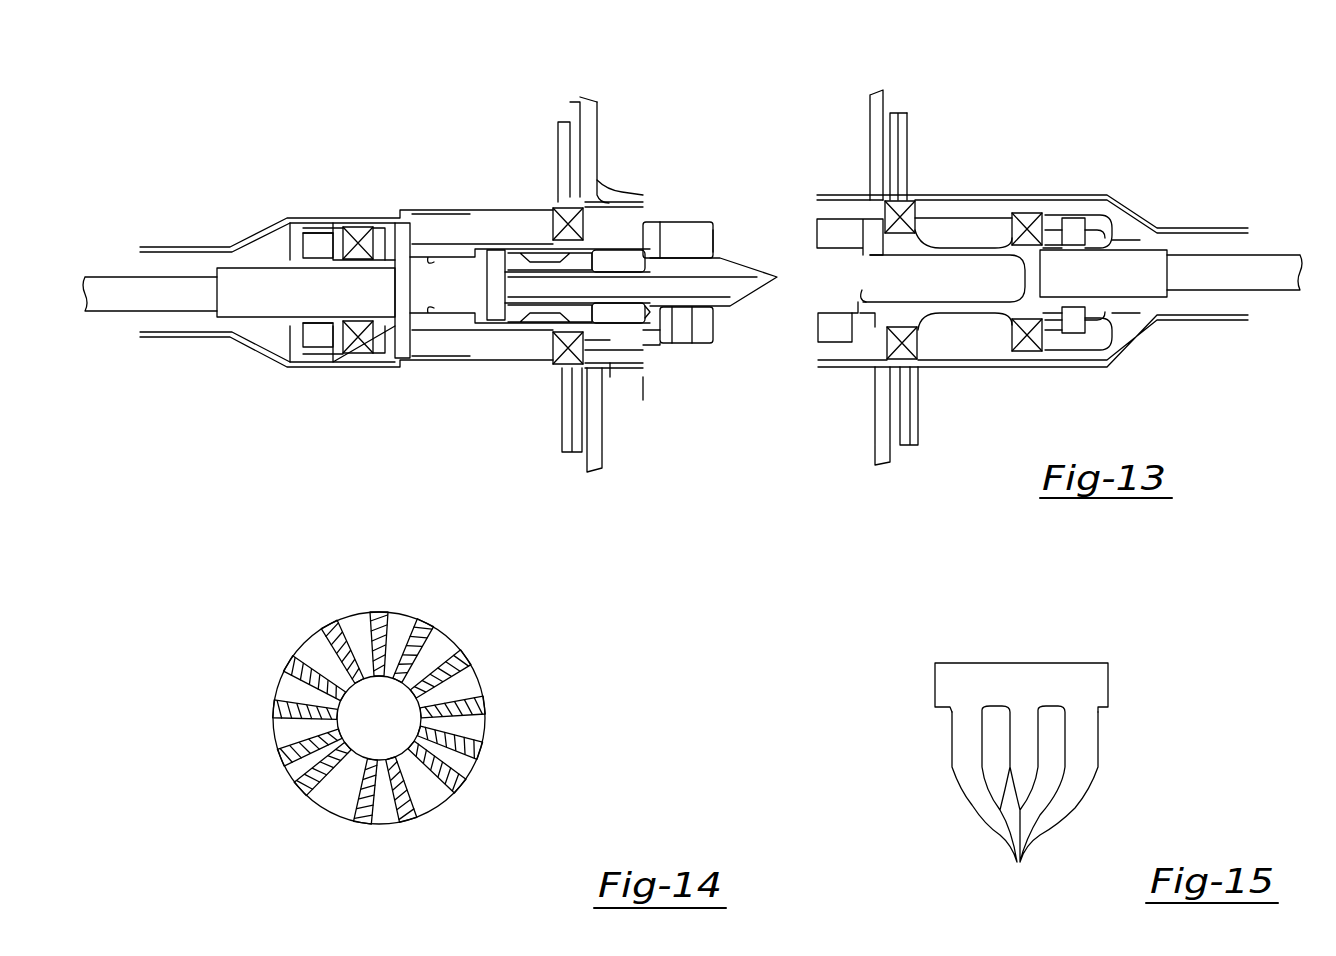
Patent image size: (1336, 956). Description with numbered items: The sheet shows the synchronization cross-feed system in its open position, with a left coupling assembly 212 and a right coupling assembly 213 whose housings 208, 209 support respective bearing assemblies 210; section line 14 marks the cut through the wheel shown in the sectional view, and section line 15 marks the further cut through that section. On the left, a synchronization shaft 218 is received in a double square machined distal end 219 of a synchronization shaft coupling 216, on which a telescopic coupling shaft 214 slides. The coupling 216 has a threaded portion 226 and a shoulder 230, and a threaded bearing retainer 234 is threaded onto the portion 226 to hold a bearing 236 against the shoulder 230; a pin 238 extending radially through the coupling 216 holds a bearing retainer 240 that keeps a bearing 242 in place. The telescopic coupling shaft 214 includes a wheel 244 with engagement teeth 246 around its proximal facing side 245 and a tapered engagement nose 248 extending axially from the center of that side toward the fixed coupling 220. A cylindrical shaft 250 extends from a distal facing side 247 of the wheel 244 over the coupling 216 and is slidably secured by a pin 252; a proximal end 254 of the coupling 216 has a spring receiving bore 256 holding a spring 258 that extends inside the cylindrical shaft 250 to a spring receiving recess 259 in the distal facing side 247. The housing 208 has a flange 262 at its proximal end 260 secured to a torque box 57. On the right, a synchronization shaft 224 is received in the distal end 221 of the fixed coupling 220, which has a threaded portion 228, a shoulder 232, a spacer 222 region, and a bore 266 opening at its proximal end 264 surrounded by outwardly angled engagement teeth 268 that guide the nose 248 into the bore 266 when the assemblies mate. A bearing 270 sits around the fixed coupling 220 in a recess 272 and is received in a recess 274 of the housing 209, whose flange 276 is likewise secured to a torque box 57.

In FIG. 13, the torque box 57 is at (564, 466).
In FIG. 13, the section line 14— 14 is at (642, 173).
In FIG. 14, the section line 15— 15 is at (287, 800).
In FIG. 13, the housing 208 is at (287, 368).
In FIG. 13, the housing 209 is at (1147, 328).
In FIG. 13, the bearing assembly 210 is at (356, 353).
In FIG. 13, the left coupling assembly 212 is at (349, 196).
In FIG. 13, the right coupling assembly 213 is at (1100, 196).
In FIG. 13, the telescopic coupling shaft 214 is at (647, 402).
In FIG. 13, the synchronization shaft coupling 216 is at (246, 251).
In FIG. 13, the synchronization shaft 218 is at (103, 311).
In FIG. 13, the distal end 219 is at (217, 288).
In FIG. 13, the fixed coupling 220 is at (935, 318).
In FIG. 13, the distal end 221 is at (1166, 258).
In FIG. 13, the spacer 222 is at (984, 320).
In FIG. 13, the synchronization shaft 224 is at (1294, 290).
In FIG. 13, the threaded portion 226 is at (299, 222).
In FIG. 13, the threaded portion 228 is at (1123, 240).
In FIG. 13, the shoulder 230 is at (388, 220).
In FIG. 13, the shoulder 232 is at (1010, 335).
In FIG. 13, the threaded bearing retainer 234 is at (311, 347).
In FIG. 13, the bearing 236 is at (1105, 216).
In FIG. 13, the pin 238 is at (410, 252).
In FIG. 13, the bearing retainer 240 is at (447, 240).
In FIG. 13, the bearing 242 is at (600, 175).
In FIG. 13, the wheel 244 is at (636, 220).
In FIG. 14, the wheel 244 is at (305, 633).
In FIG. 15, the wheel 244 is at (1090, 656).
In FIG. 13, the proximal facing side 245 is at (703, 227).
In FIG. 13, the engagement teeth 246 is at (713, 360).
In FIG. 14, the engagement teeth 246 is at (435, 705).
In FIG. 15, the engagement teeth 246 is at (1025, 799).
In FIG. 13, the distal facing side 247 is at (614, 375).
In FIG. 13, the tapered engagement nose 248 is at (796, 262).
In FIG. 13, the cylindrical shaft 250 is at (610, 351).
In FIG. 13, the pin 252 is at (505, 321).
In FIG. 13, the proximal end 254 is at (548, 245).
In FIG. 13, the spring receiving bore 256 is at (511, 244).
In FIG. 13, the spring 258 is at (735, 274).
In FIG. 13, the spring receiving recess 259 is at (711, 296).
In FIG. 13, the proximal end 260 is at (586, 150).
In FIG. 13, the flange 262 is at (563, 111).
In FIG. 13, the proximal end 264 is at (830, 217).
In FIG. 13, the bore 266 is at (863, 322).
In FIG. 13, the engagement teeth 268 is at (817, 345).
In FIG. 13, the bearing 270 is at (924, 363).
In FIG. 13, the recess 272 is at (918, 218).
In FIG. 13, the recess 274 is at (893, 112).
In FIG. 13, the flange 276 is at (907, 130).